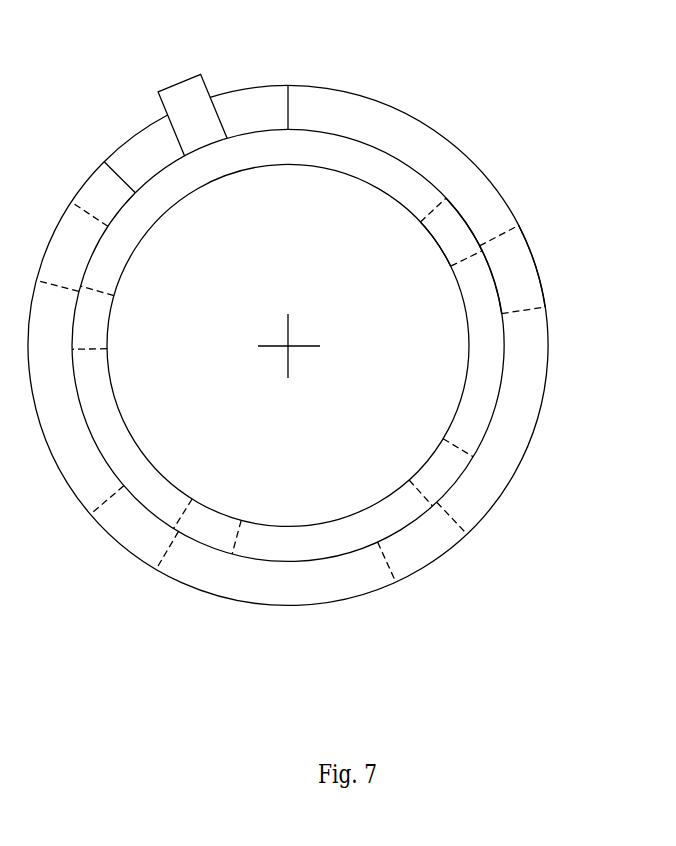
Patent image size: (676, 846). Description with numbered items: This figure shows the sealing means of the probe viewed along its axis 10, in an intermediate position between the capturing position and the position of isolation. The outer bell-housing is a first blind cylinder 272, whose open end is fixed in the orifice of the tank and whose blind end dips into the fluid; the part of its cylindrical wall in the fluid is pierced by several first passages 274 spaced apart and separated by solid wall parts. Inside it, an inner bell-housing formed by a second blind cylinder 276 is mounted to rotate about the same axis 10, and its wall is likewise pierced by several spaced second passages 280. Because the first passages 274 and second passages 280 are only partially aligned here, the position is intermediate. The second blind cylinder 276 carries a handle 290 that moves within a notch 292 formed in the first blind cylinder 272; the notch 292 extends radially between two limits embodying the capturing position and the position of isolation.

The axis 10 is at (288, 348).
The first blind cylinder 272 is at (440, 165).
The first passages 274 is at (520, 280).
The second blind cylinder 276 is at (332, 538).
The second passages 280 is at (450, 240).
The handle 290 is at (179, 98).
The notch 292 is at (138, 152).